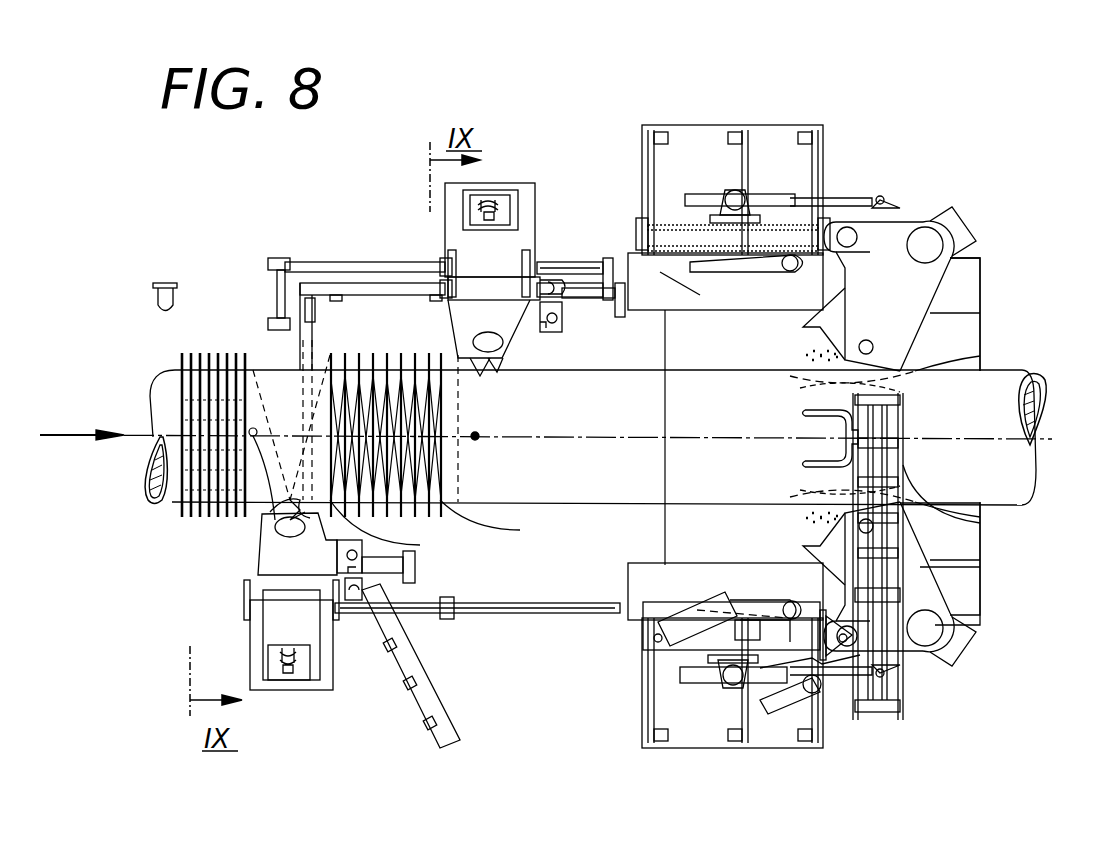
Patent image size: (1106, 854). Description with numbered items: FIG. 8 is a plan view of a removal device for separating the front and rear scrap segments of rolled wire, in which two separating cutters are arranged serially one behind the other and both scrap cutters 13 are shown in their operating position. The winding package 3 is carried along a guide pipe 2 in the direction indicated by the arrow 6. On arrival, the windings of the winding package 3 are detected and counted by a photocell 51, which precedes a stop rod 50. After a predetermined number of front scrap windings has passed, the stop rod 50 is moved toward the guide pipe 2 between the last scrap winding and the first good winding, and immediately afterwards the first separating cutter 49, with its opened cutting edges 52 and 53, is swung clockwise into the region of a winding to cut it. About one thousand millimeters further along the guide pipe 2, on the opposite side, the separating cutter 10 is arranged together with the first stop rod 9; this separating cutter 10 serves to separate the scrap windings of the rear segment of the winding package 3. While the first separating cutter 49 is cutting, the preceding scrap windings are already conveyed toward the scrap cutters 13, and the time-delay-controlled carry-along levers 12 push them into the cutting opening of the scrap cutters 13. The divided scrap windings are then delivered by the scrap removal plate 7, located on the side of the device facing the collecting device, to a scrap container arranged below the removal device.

The guide pipe 2 is at (1000, 492).
The winding package 3 is at (440, 500).
The arrow 6 is at (75, 442).
The scrap removal plate 7 is at (965, 330).
The first stop rod 9 is at (480, 435).
The separating cutter 10 is at (527, 172).
The carry-along lever 12 is at (748, 272).
The scrap cutter 13 is at (930, 190).
The first separating cutter 49 is at (303, 710).
The stop rod 50 is at (290, 505).
The photocell 51 is at (155, 292).
The cutting edge 52 is at (425, 531).
The cutting edge 53 is at (300, 510).